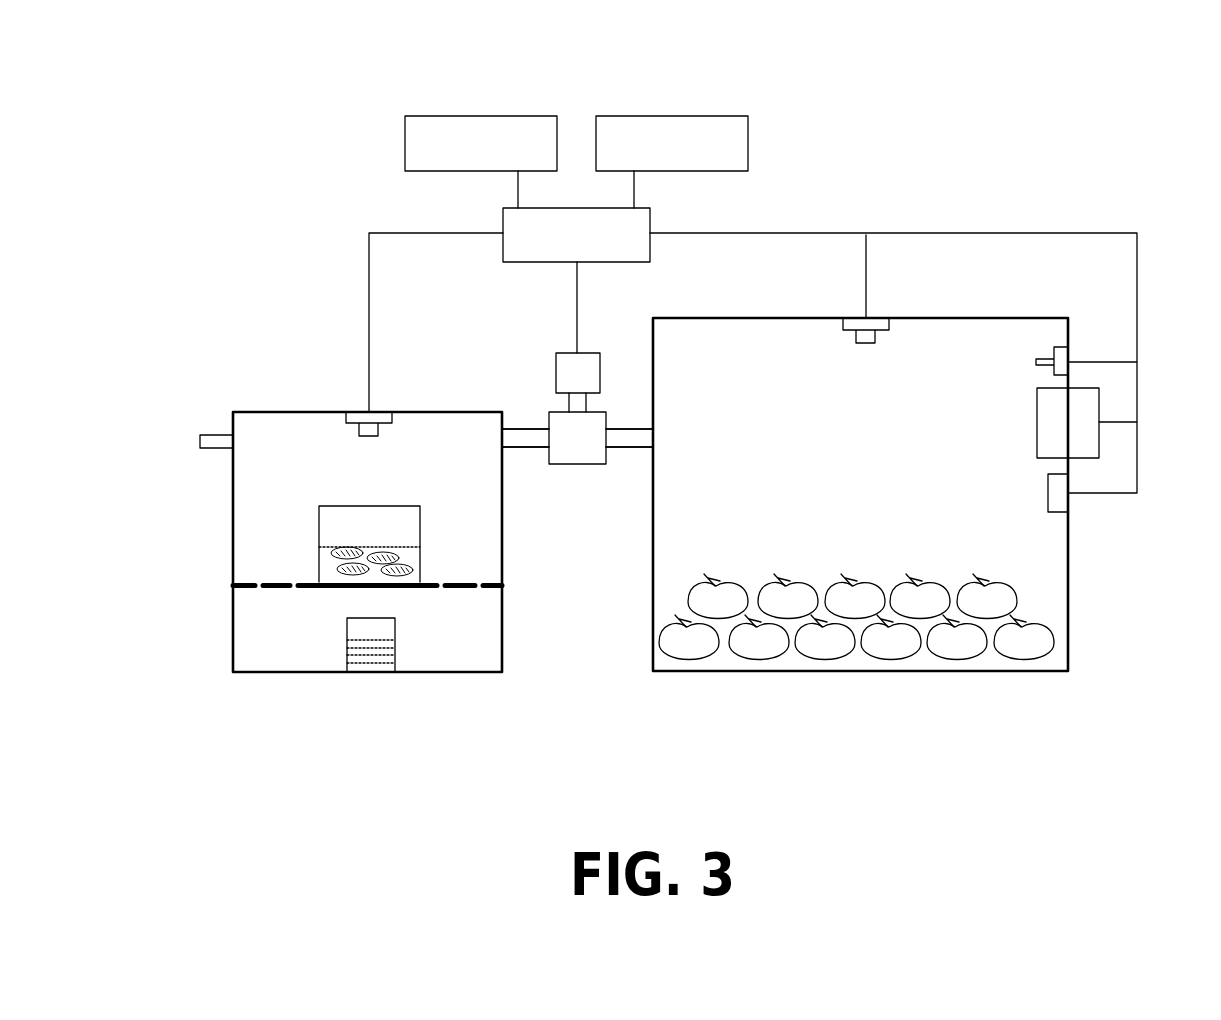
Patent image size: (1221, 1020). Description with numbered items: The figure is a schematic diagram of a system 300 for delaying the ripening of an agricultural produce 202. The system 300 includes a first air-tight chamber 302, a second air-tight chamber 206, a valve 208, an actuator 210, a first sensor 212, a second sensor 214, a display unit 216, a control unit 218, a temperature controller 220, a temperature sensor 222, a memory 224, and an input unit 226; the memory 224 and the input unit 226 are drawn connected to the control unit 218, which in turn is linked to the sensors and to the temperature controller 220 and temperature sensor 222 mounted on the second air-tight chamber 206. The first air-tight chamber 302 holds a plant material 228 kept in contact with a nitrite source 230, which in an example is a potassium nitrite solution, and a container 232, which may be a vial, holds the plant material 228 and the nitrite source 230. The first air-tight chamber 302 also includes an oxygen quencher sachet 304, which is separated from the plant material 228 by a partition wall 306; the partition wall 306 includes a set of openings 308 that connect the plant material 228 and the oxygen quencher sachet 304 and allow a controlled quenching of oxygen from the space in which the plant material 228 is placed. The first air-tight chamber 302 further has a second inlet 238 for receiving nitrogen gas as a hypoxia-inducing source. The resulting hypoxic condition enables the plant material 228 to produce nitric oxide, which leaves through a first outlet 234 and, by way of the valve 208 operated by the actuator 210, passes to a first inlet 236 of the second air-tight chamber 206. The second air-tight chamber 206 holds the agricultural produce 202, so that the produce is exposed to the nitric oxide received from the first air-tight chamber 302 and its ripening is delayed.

The system 300 is at (252, 110).
The agricultural produce 202 is at (866, 676).
The second air-tight chamber 206 is at (1100, 600).
The valve 208 is at (590, 464).
The actuator 210 is at (558, 350).
The first sensor 212 is at (357, 412).
The second sensor 214 is at (877, 317).
The display unit 216 is at (1068, 503).
The control unit 218 is at (650, 222).
The temperature controller 220 is at (1099, 443).
The temperature sensor 222 is at (1063, 320).
The memory 224 is at (468, 116).
The input unit 226 is at (716, 116).
The plant material 228 is at (357, 572).
The nitrite source 230 is at (327, 565).
The container 232 is at (437, 538).
The first outlet 234 is at (522, 430).
The first inlet 236 is at (620, 430).
The second inlet 238 is at (217, 435).
The first air-tight chamber 302 is at (212, 643).
The oxygen quencher sachet 304 is at (378, 652).
The partition wall 306 is at (242, 590).
The set of openings 308 is at (443, 588).